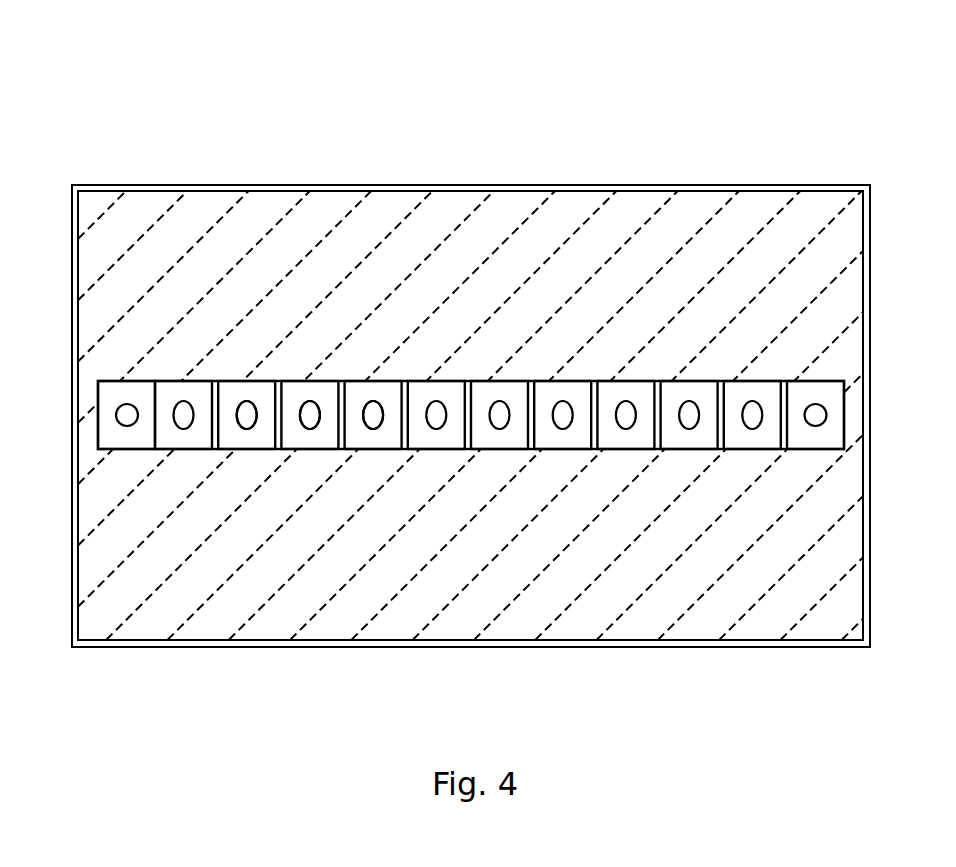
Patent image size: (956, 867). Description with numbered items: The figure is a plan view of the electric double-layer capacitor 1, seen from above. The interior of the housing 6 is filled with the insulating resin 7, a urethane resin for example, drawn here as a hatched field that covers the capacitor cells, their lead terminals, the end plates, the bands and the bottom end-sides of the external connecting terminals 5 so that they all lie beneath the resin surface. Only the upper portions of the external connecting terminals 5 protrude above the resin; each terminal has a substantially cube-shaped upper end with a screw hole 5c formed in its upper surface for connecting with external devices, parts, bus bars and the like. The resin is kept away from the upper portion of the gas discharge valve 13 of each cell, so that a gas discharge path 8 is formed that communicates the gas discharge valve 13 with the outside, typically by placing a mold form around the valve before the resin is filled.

The lighting device 1 is at (297, 143).
The external connecting terminal 5 is at (135, 394).
The screw hole 5c is at (128, 427).
The housing 6 is at (413, 186).
The insulating resin 7 is at (518, 212).
The gas discharge path 8 is at (612, 382).
The gas discharge valve 13 is at (373, 403).